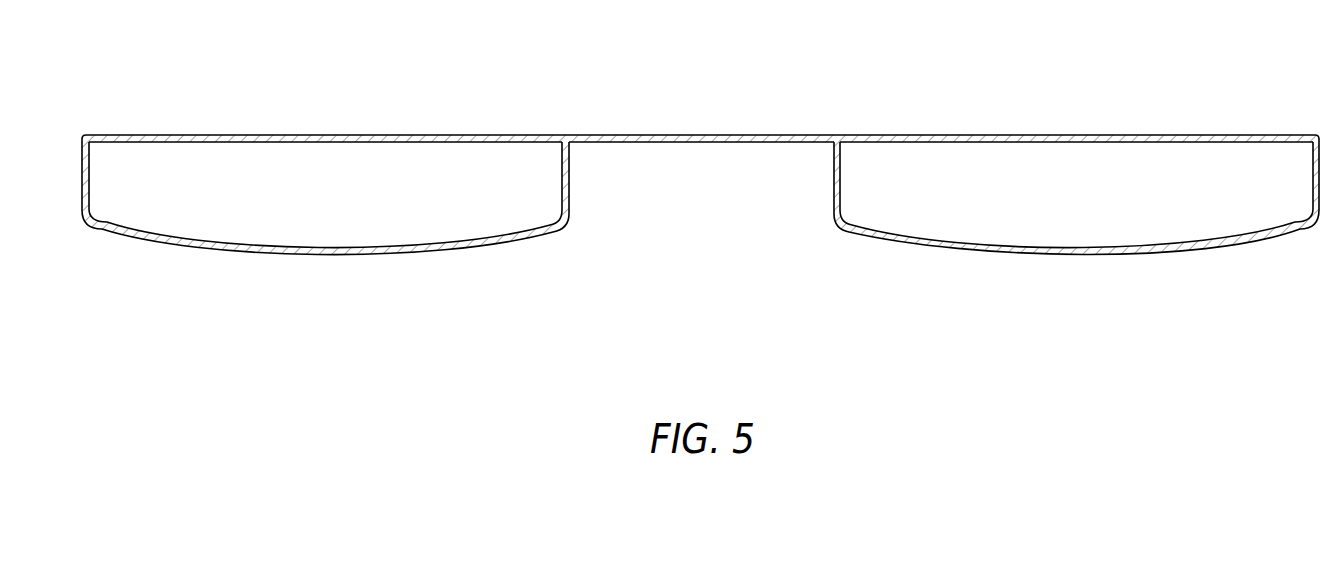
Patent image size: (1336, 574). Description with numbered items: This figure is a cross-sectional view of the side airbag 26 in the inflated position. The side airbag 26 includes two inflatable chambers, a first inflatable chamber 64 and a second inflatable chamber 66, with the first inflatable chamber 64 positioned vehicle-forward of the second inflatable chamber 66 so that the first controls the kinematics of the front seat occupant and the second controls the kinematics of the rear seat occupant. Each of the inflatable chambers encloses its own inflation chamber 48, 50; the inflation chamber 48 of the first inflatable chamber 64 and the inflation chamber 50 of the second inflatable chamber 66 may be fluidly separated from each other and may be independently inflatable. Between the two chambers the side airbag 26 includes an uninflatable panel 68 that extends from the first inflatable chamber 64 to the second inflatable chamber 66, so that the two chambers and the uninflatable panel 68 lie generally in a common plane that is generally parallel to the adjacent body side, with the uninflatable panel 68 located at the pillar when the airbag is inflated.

The side airbag 26 is at (985, 119).
The inflation chamber 48 is at (382, 228).
The inflation chamber 50 is at (1019, 227).
The first inflatable chamber 64 is at (239, 253).
The second inflatable chamber 66 is at (1163, 255).
The uninflatable panel 68 is at (716, 136).